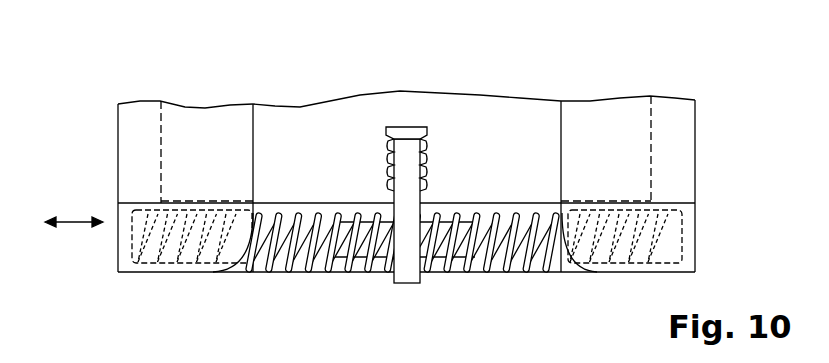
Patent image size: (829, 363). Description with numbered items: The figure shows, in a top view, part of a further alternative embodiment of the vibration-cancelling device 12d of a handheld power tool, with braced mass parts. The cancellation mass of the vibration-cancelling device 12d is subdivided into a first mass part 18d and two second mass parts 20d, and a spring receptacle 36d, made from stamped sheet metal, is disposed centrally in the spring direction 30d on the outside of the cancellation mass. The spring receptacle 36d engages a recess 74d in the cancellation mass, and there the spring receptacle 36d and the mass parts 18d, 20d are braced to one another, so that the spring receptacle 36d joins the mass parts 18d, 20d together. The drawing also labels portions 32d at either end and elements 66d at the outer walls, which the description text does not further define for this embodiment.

The vibration-cancelling device 12d is at (160, 76).
The first mass part 18d is at (293, 125).
The second mass part 20d is at (345, 122).
The spring direction 30d is at (77, 226).
The end portion 32d is at (128, 150).
The spring receptacle 36d is at (407, 285).
The stop wall 66d is at (118, 122).
The recess 74d is at (407, 150).